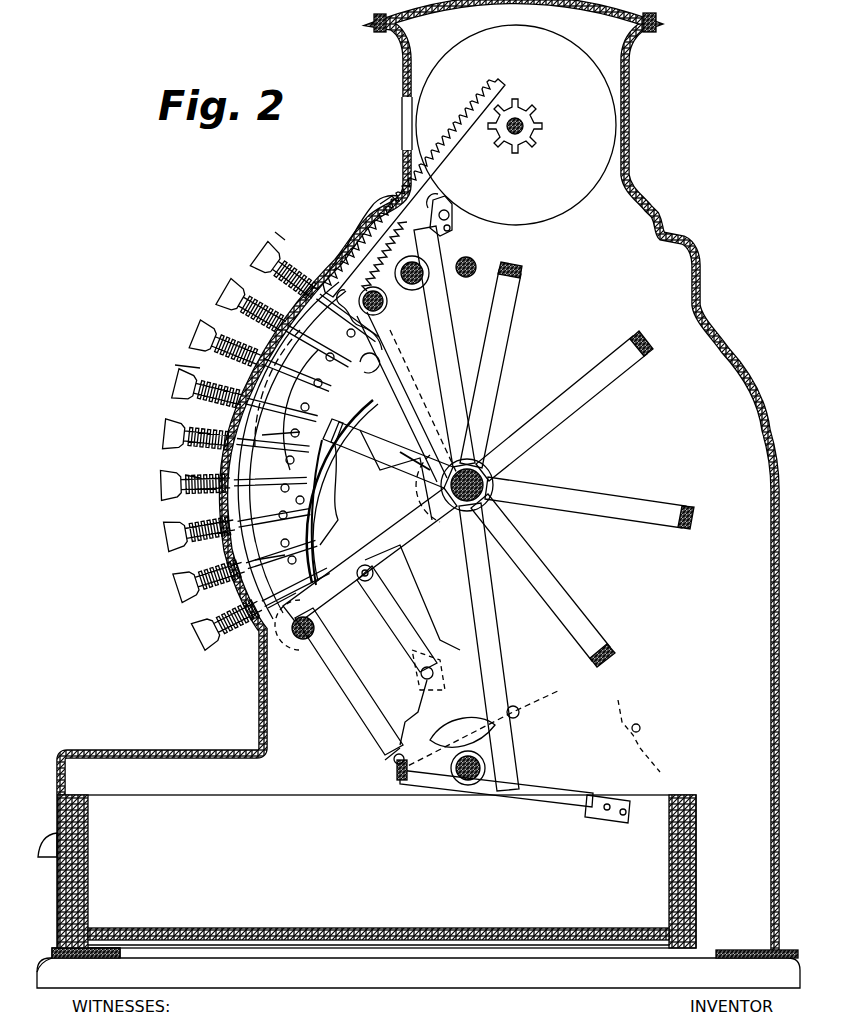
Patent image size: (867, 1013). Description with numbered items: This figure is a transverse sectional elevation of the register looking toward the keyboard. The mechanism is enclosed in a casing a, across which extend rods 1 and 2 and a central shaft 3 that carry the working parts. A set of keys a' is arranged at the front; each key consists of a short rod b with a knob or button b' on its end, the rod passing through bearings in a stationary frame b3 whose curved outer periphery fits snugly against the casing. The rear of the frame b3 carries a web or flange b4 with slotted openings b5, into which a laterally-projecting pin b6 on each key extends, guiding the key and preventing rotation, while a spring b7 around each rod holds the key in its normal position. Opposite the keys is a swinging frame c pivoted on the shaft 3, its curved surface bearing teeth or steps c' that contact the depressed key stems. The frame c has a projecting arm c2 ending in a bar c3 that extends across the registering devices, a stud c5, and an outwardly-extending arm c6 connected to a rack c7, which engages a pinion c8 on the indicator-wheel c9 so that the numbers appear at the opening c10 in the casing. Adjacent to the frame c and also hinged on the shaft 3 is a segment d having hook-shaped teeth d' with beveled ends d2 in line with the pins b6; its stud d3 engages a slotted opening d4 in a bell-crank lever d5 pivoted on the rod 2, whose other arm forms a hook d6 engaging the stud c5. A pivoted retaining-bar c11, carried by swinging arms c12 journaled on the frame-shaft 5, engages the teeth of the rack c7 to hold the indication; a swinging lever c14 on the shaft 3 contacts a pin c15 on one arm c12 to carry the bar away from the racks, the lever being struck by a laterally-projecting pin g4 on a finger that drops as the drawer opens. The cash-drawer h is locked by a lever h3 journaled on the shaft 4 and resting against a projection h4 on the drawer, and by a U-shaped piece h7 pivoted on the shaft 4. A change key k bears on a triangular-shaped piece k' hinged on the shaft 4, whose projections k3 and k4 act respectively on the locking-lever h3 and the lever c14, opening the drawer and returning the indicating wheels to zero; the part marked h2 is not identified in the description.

The casing a is at (418, 494).
The set of keys a' is at (283, 226).
The knob or button b' is at (246, 443).
The short rod b is at (292, 463).
The frame b3 is at (382, 330).
The web or flange b4 is at (273, 435).
The slotted openings b5 is at (380, 362).
The laterally-projecting pin or stud b6 is at (262, 556).
The spring b7 is at (180, 411).
The swinging frame c is at (369, 491).
The teeth or steps c' is at (333, 512).
The projecting arm c2 is at (546, 356).
The bar c3 is at (522, 268).
The stud or pin c5 is at (433, 673).
The outwardly-extending arm c6 is at (411, 467).
The rack c7 is at (361, 232).
The pinion c8 is at (517, 154).
The indicator-wheel c9 is at (516, 125).
The opening in the casing c10 is at (414, 188).
The pivoted retaining-bar c11 is at (448, 205).
The swinging arms c12 is at (452, 240).
The swinging lever c14 is at (444, 346).
The pin c15 is at (449, 215).
The segment d is at (408, 417).
The hook-shaped teeth d' is at (292, 538).
The beveled ends d2 is at (278, 608).
The projecting stud or pin d3 is at (368, 565).
The slotted opening d4 is at (385, 625).
The bell-crank lever d5 is at (311, 625).
The hook d6 is at (438, 662).
The rod 1 is at (384, 300).
The rod 2 is at (300, 640).
The central rod or shaft 3 is at (495, 485).
The rod or shaft 4 is at (466, 785).
The frame-shaft 5 is at (420, 282).
The cash-drawer h is at (377, 871).
The drawer catch h2 is at (392, 768).
The lever h3 is at (540, 782).
The projection h4 is at (615, 800).
The U-shaped piece h7 is at (400, 782).
The key k is at (349, 681).
The triangular-shaped piece k' is at (480, 730).
The projection k3 is at (430, 712).
The projection k4 is at (519, 710).
The laterally-projecting pin g4 is at (640, 726).